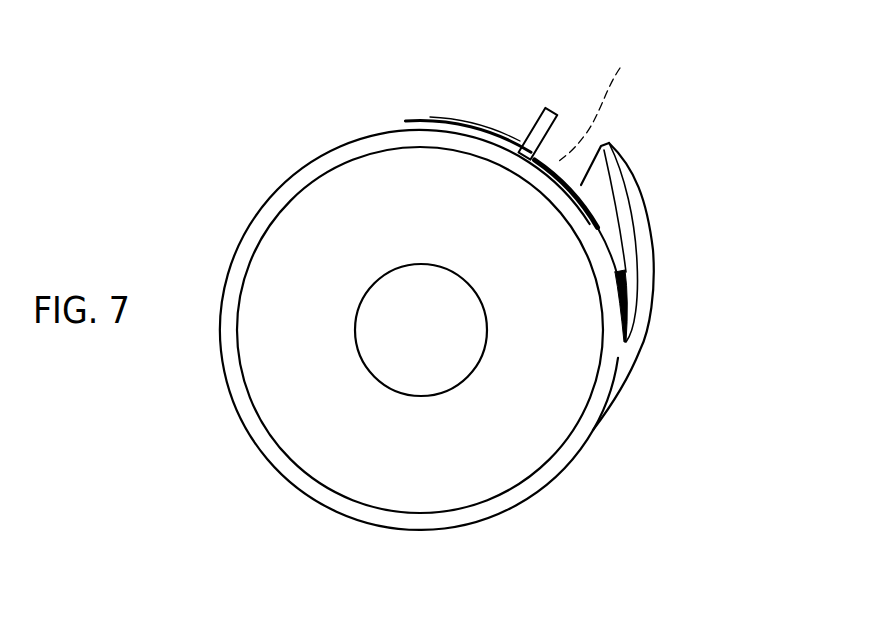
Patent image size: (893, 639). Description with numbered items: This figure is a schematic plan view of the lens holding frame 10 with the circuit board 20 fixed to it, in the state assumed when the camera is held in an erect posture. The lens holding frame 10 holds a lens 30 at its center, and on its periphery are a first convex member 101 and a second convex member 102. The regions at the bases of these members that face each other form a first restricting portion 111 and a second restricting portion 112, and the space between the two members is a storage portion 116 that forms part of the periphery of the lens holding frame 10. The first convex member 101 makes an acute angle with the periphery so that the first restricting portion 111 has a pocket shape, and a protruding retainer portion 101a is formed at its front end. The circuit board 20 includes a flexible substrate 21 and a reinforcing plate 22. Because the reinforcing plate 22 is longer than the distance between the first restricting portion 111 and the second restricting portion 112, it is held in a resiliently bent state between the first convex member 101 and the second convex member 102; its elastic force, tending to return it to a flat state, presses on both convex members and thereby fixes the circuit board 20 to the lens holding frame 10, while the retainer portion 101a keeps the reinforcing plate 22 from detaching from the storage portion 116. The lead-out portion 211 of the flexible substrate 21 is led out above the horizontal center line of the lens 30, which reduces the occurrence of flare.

The lens holding frame 10 is at (332, 452).
The lens 30 is at (395, 302).
The circuit board 20 is at (432, 120).
The flexible substrate 21 is at (477, 126).
The second convex member 102 is at (553, 110).
The second restricting portion 112 is at (547, 154).
The lead-out portion 211 is at (608, 110).
The retainer portion 101a is at (600, 170).
The reinforcing plate 22 is at (617, 192).
The storage portion 116 is at (617, 223).
The first convex member 101 is at (653, 252).
The first restricting portion 111 is at (630, 305).